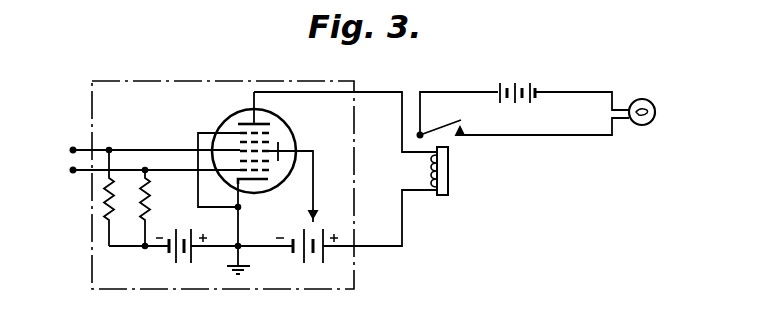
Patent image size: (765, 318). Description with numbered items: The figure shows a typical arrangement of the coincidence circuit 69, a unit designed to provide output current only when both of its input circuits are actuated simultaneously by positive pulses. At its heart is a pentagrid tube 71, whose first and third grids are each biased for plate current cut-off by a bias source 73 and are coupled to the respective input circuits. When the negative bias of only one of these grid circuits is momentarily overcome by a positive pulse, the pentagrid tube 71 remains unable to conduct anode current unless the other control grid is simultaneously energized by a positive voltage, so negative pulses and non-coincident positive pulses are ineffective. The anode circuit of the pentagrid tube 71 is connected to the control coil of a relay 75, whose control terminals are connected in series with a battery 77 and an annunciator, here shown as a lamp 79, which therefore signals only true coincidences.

The coincidence circuit 69 is at (92, 104).
The pentagrid tube 71 is at (241, 114).
The bias source 73 is at (180, 270).
The relay 75 is at (452, 184).
The battery 77 is at (514, 82).
The lamp 79 is at (655, 107).